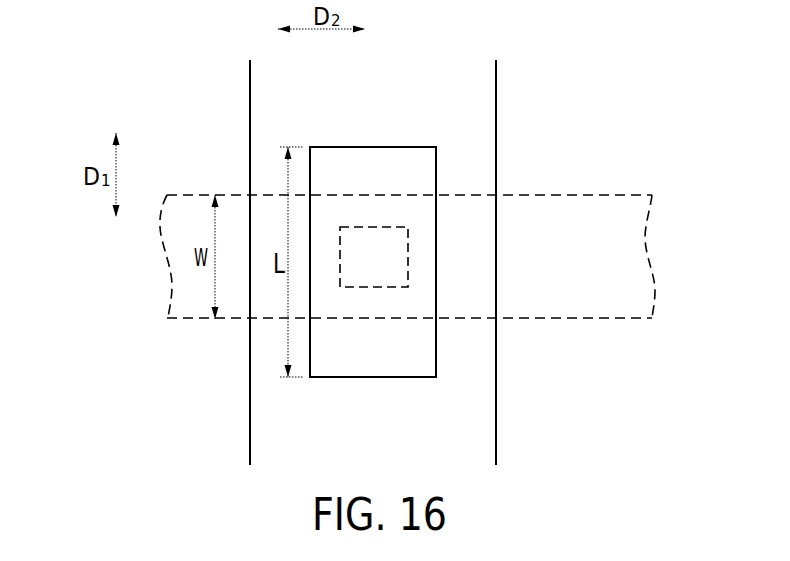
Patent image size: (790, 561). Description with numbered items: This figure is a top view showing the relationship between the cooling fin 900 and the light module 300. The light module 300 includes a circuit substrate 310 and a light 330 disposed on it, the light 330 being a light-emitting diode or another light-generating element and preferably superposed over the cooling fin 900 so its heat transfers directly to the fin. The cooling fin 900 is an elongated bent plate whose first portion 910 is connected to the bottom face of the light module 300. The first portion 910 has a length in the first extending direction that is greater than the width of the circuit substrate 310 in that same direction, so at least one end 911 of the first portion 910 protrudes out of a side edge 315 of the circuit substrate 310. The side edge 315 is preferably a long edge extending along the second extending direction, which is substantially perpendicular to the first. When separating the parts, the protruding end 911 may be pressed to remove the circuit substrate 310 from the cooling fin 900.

The end 911 is at (373, 147).
The first portion 910 is at (405, 168).
The cooling fin 900 is at (438, 170).
The side edge 315 is at (571, 193).
The light 330 is at (383, 287).
The circuit substrate 310 is at (622, 320).
The light module 300 is at (618, 380).